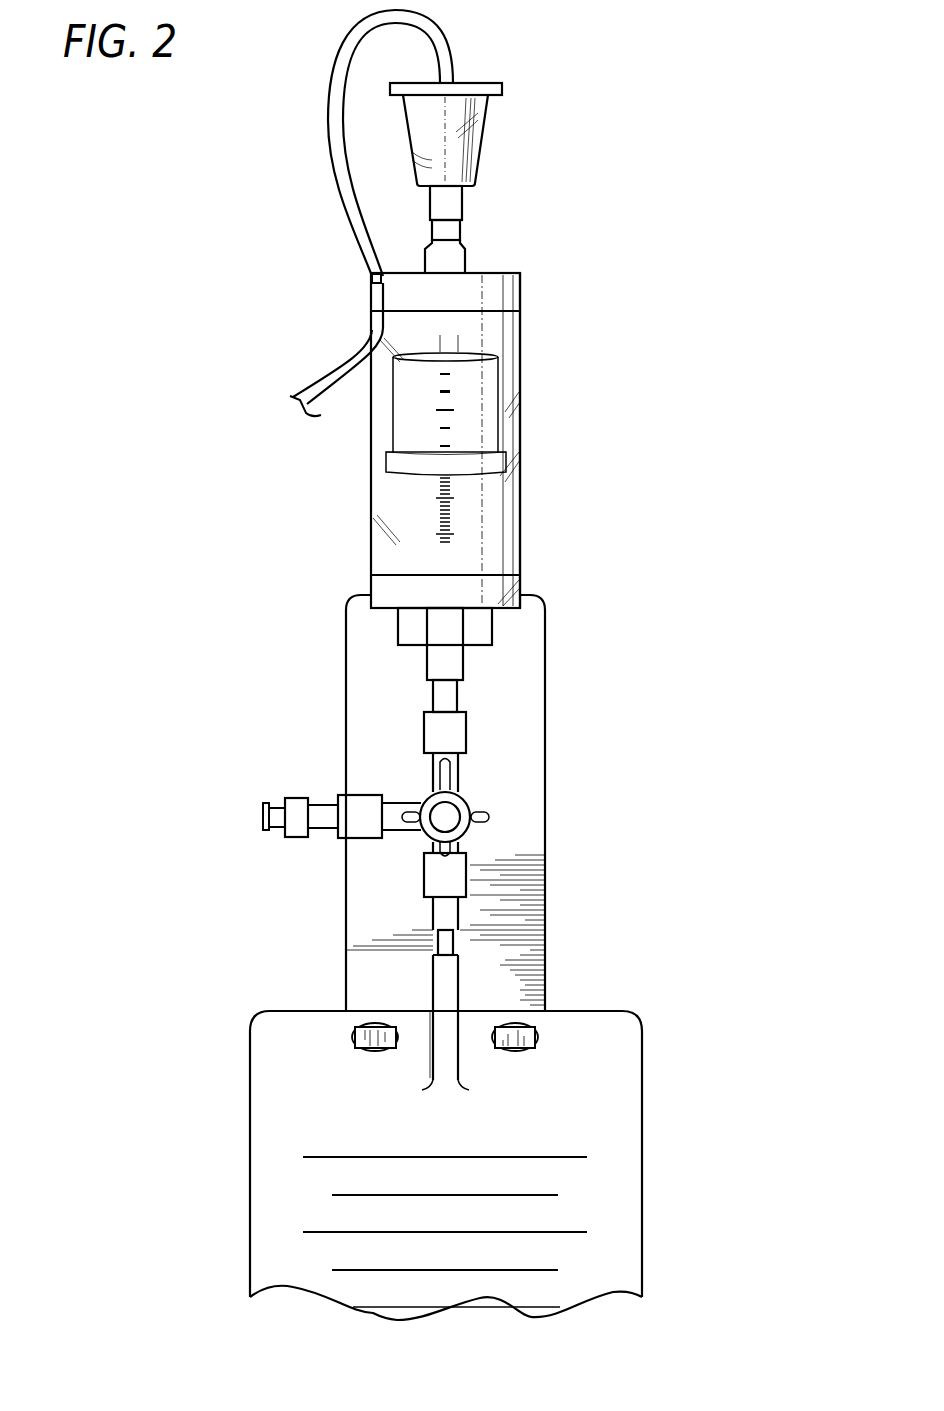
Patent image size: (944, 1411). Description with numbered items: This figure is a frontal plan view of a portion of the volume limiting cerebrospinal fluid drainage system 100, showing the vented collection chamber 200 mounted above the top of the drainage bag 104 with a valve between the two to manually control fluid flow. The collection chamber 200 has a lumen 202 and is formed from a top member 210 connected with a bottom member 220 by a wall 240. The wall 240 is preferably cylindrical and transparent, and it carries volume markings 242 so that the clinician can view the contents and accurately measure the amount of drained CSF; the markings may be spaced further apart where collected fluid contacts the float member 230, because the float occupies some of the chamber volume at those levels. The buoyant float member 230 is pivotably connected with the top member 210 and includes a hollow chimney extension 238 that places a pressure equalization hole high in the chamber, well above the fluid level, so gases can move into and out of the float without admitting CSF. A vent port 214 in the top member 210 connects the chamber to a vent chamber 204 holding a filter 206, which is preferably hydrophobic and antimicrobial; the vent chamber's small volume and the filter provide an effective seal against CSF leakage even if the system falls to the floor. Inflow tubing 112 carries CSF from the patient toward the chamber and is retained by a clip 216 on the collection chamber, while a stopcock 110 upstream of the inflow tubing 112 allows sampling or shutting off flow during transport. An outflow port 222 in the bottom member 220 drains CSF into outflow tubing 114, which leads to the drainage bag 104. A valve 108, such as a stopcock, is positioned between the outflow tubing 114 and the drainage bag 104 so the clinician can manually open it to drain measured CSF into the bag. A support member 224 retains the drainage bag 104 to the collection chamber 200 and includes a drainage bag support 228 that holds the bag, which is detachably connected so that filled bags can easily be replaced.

The system 100 is at (758, 173).
The drainage bag 104 is at (600, 1103).
The valve 108 is at (470, 795).
The stopcock 110 is at (360, 796).
The inflow tubing 112 is at (455, 42).
The outflow tubing 114 is at (457, 697).
The collection chamber 200 is at (312, 441).
The lumen 202 is at (497, 498).
The vent chamber 204 is at (472, 152).
The filter 206 is at (482, 82).
The top member 210 is at (521, 292).
The vent port 214 is at (466, 258).
The clip 216 is at (371, 279).
The bottom member 220 is at (519, 584).
The outflow port 222 is at (427, 622).
The support member 224 is at (532, 727).
The drainage bag support 228 is at (355, 1038).
The float member 230 is at (488, 433).
The hollow chimney extension 238 is at (456, 343).
The wall 240 is at (521, 522).
The volume markings 242 is at (430, 440).